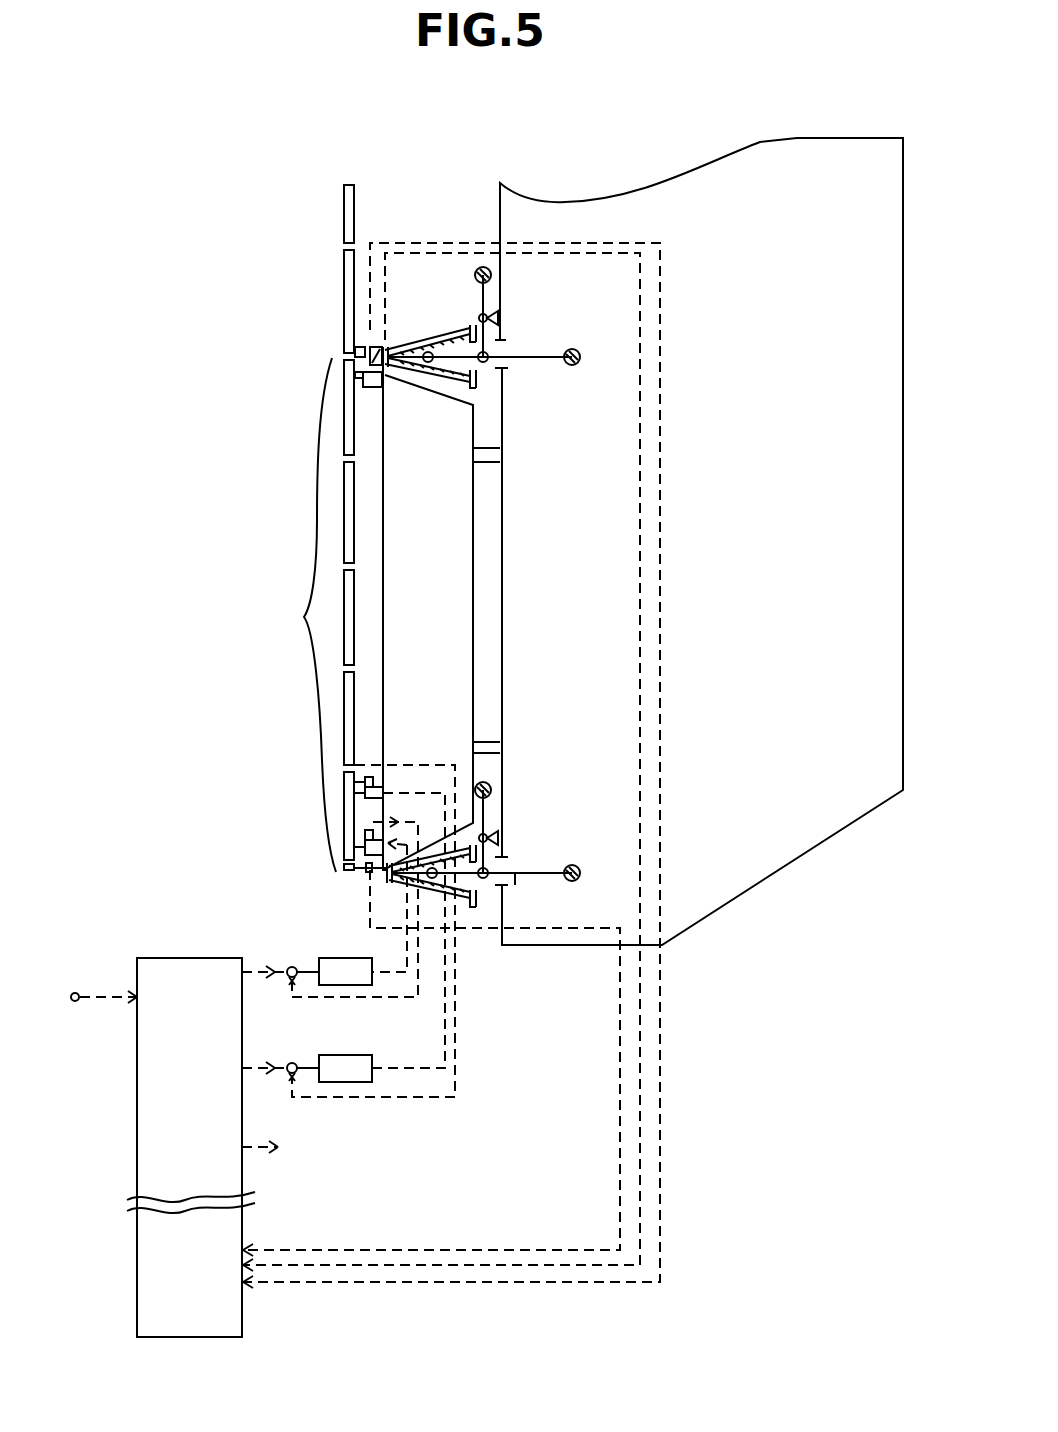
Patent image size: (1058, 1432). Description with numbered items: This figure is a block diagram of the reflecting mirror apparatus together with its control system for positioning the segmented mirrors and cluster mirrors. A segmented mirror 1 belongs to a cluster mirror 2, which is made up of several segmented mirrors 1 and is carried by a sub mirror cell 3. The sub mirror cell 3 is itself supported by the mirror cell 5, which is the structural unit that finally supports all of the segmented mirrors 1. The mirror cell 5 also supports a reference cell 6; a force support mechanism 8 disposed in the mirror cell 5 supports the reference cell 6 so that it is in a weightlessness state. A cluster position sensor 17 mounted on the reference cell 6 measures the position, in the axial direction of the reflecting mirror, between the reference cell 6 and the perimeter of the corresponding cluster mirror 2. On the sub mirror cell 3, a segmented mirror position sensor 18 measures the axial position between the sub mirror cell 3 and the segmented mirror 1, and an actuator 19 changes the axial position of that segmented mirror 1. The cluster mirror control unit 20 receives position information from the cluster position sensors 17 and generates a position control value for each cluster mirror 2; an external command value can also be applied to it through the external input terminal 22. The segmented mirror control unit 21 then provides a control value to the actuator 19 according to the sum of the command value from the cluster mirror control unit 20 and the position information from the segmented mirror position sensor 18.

The segmented mirror 1 is at (340, 297).
The cluster mirror 2 is at (304, 617).
The sub mirror cell 3 is at (447, 398).
The mirror cell 5 is at (593, 198).
The reference cell 6 is at (427, 350).
The force support mechanism 8 is at (515, 880).
The cluster position sensor 17 is at (353, 375).
The segmented mirror position sensor 18 is at (370, 783).
The actuator 19 is at (365, 796).
The cluster mirror control unit 20 is at (215, 957).
The segmented mirror control unit 21 is at (340, 958).
The external input terminal 22 is at (75, 993).